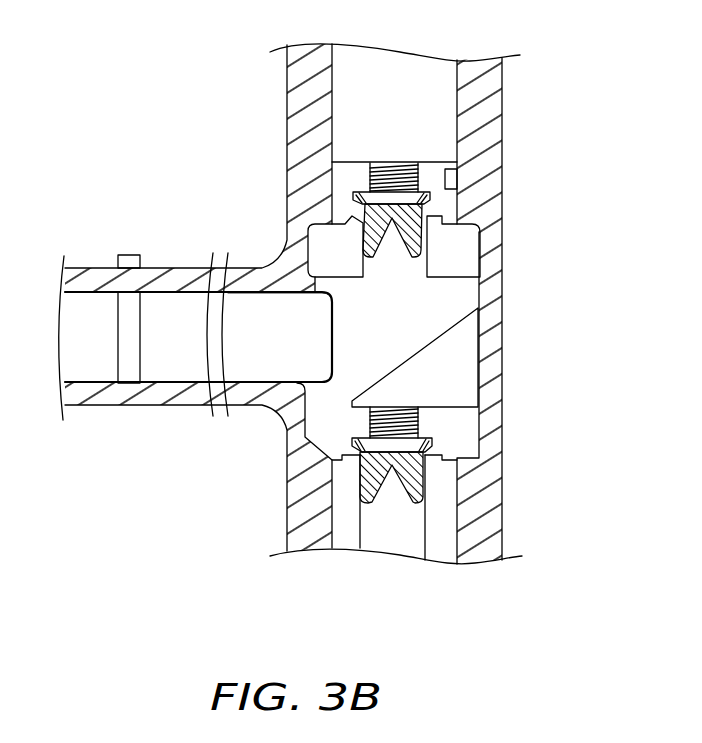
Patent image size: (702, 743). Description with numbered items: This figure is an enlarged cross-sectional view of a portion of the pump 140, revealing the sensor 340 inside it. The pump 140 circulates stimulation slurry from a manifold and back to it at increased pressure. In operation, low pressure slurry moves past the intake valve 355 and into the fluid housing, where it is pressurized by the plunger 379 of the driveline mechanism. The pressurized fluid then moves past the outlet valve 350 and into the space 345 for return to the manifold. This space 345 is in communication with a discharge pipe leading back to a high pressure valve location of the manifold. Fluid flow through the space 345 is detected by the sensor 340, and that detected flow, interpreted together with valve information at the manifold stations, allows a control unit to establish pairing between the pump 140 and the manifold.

The pump 140 is at (125, 81).
The space 345 is at (347, 177).
The sensor 340 is at (449, 177).
The outlet valve 350 is at (422, 245).
The intake valve 355 is at (430, 440).
The plunger 379 is at (312, 351).